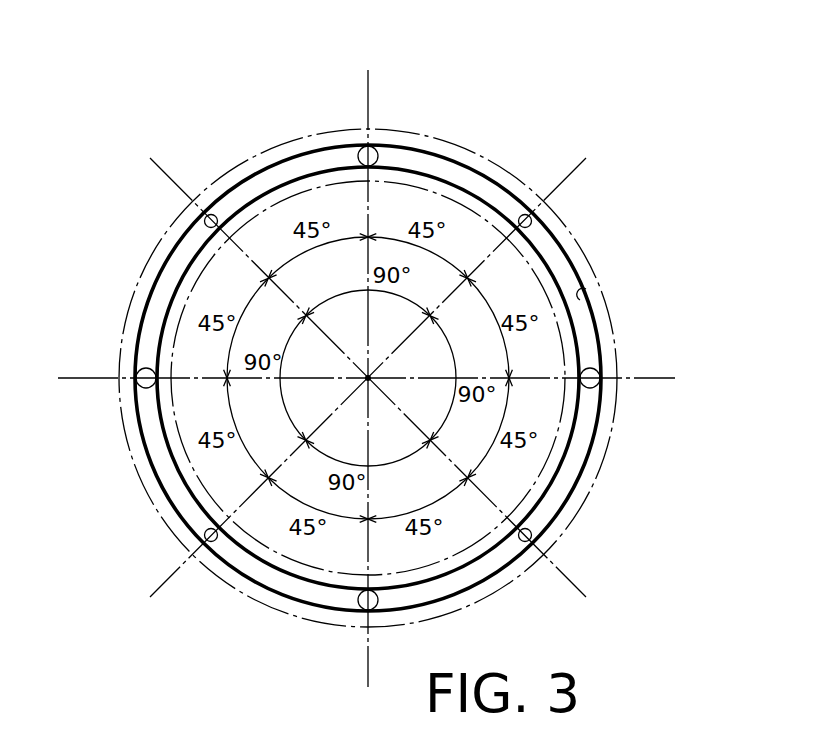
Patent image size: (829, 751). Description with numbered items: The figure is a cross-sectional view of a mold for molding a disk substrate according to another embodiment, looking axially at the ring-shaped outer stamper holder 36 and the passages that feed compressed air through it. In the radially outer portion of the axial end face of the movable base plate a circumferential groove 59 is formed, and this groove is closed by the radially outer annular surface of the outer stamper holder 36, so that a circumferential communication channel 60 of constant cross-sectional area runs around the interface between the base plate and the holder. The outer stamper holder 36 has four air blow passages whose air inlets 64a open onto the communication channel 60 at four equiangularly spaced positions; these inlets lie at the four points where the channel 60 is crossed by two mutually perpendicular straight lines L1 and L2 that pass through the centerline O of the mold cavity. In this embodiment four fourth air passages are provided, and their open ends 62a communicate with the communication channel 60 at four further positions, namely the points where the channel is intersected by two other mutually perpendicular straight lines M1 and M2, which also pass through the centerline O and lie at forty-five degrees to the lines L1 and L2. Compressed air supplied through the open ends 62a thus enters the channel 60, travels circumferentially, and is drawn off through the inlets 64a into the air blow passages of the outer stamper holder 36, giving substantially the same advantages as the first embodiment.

The outer stamper holder 36 is at (633, 458).
The circumferential groove 59 is at (590, 303).
The circumferential communication channel 60 is at (158, 465).
The open ends of the fourth air passages 62a is at (378, 150).
The air inlets of the air blow passages 64a is at (205, 225).
The first straight line L1 is at (188, 181).
The second straight line L2 is at (558, 181).
The first straight line M1 is at (380, 86).
The second straight line M2 is at (634, 370).
The centerline O is at (389, 367).